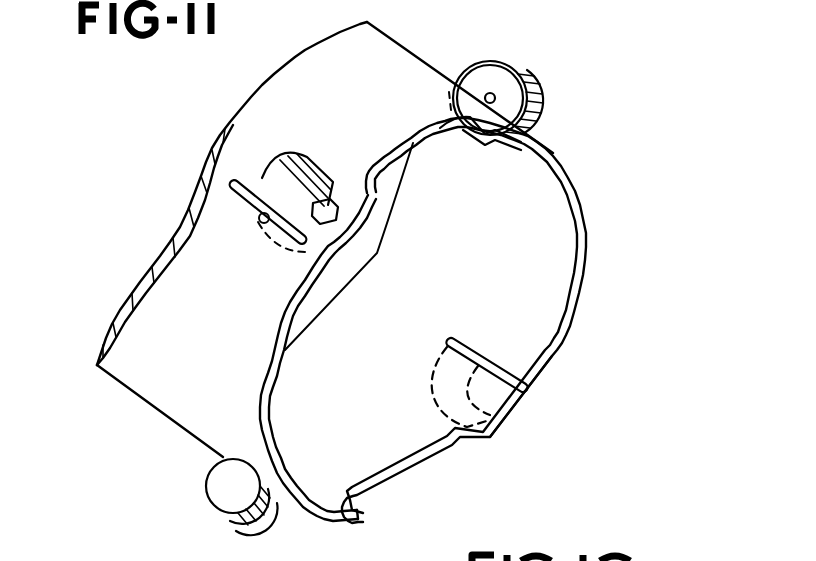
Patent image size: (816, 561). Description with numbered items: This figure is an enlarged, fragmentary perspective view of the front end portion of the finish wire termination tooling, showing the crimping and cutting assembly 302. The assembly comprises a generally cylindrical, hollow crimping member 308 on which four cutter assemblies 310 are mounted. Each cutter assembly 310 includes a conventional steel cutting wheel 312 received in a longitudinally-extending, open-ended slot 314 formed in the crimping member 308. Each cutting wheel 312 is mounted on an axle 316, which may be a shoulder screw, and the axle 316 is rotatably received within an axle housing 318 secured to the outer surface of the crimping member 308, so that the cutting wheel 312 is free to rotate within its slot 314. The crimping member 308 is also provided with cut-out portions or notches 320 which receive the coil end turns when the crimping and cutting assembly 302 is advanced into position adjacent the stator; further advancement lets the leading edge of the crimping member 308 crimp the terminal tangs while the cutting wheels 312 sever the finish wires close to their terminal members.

The crimping and cutting assembly 302 is at (593, 187).
The crimping member 308 is at (553, 247).
The cutter assembly 310 is at (263, 157).
The cutting wheel 312 is at (232, 183).
The slot 314 is at (340, 183).
The axle 316 is at (262, 223).
The axle housing 318 is at (300, 167).
The notch 320 is at (430, 157).